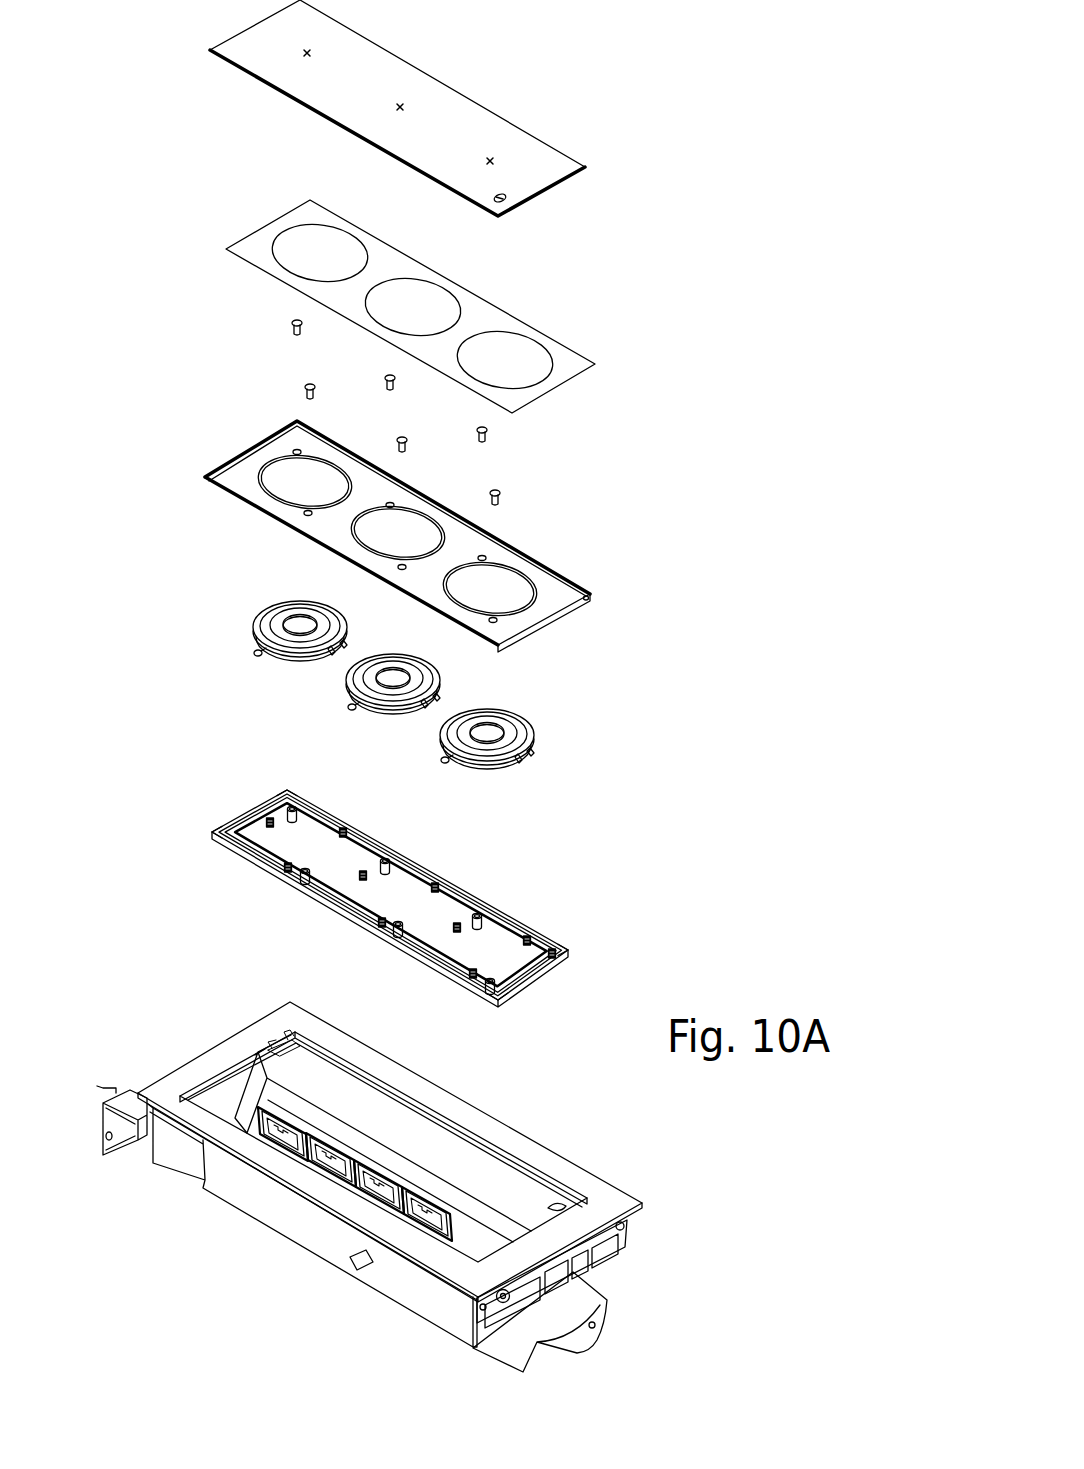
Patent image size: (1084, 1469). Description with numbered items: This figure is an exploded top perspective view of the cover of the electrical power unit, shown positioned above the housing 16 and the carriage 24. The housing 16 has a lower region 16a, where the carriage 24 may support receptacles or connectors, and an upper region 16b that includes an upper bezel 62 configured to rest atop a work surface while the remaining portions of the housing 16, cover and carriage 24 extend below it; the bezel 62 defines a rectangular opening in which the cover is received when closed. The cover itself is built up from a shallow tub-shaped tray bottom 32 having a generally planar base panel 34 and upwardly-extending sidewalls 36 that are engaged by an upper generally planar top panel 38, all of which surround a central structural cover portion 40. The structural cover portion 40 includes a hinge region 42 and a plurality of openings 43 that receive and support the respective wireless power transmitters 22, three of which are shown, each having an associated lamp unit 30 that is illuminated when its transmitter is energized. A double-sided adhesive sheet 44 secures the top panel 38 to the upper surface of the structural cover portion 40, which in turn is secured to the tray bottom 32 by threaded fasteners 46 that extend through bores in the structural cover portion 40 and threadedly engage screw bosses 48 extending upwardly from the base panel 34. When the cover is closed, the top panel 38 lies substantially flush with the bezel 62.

The top panel 38 is at (470, 118).
The double-sided adhesive sheet 44 is at (568, 362).
The threaded fasteners 46 is at (297, 380).
The openings 43 is at (312, 475).
The structural cover portion 40 is at (435, 546).
The hinge region 42 is at (591, 608).
The wireless power transmitters 22 is at (352, 713).
The lamp unit 30 is at (250, 662).
The tray bottom 32 is at (413, 911).
The base panel 34 is at (386, 911).
The sidewalls 36 is at (220, 827).
The screw bosses 48 is at (292, 797).
The housing 16 is at (415, 1187).
The lower region of housing 16a is at (416, 1329).
The upper region of housing 16b is at (435, 1152).
The upper bezel 62 is at (470, 1117).
The carriage 24 is at (600, 1287).